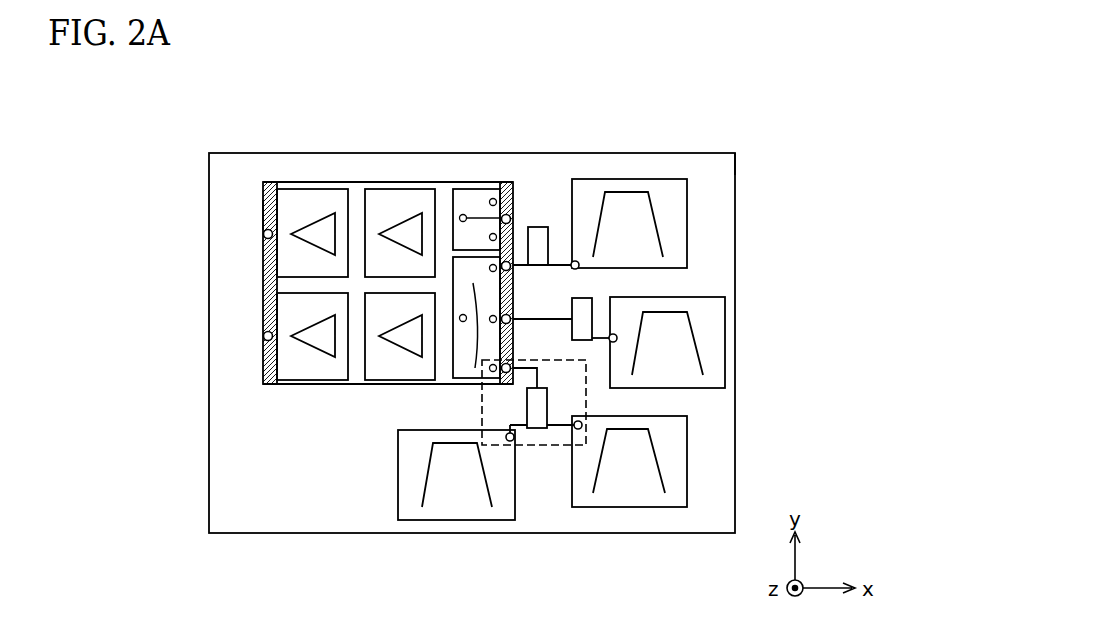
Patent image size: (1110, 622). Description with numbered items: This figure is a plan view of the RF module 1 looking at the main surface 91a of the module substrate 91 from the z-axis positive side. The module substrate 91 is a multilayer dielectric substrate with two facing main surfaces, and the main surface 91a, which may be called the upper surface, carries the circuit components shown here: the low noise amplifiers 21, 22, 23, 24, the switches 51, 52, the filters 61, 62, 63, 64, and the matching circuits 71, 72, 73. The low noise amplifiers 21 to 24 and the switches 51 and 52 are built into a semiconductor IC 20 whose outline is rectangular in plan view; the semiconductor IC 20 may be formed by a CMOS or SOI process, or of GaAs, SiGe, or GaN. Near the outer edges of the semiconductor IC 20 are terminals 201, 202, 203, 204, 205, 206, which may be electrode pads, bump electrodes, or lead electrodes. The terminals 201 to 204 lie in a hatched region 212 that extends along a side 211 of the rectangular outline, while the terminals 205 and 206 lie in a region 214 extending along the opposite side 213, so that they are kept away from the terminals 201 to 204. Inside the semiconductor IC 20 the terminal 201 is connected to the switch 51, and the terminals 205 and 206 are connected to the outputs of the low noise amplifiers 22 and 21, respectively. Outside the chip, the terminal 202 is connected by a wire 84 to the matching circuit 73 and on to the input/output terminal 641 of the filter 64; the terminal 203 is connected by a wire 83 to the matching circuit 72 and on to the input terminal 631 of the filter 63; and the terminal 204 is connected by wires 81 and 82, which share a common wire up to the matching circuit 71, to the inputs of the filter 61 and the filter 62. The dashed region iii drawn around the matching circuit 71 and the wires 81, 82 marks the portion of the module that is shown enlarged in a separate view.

The RF module 1 is at (518, 299).
The module substrate 91 is at (640, 152).
The main surface 91a is at (724, 162).
The semiconductor integrated circuit 20 is at (394, 276).
The low noise amplifier 21 is at (327, 381).
The low noise amplifier 22 is at (310, 189).
The low noise amplifier 23 is at (373, 381).
The low noise amplifier 24 is at (387, 189).
The switch 51 is at (458, 378).
The switch 52 is at (468, 189).
The filter 61 is at (398, 470).
The filter 62 is at (687, 472).
The filter 63 is at (725, 341).
The filter 64 is at (687, 244).
The input terminal of filter 63 631 is at (613, 342).
The input/output terminal of filter 64 641 is at (580, 268).
The matching circuit 71 is at (548, 402).
The matching circuit 72 is at (578, 298).
The matching circuit 73 is at (540, 226).
The wire 81 is at (513, 440).
The wire 82 is at (552, 428).
The wire 83 is at (520, 320).
The wire 84 is at (520, 266).
The terminal 201 is at (510, 217).
The terminal 202 is at (510, 269).
The terminal 203 is at (510, 322).
The terminal 204 is at (507, 372).
The terminal 205 is at (265, 236).
The terminal 206 is at (265, 338).
The side 211 is at (514, 183).
The region 212 is at (506, 183).
The side 213 is at (263, 222).
The region 214 is at (268, 183).
The region iii is at (543, 446).